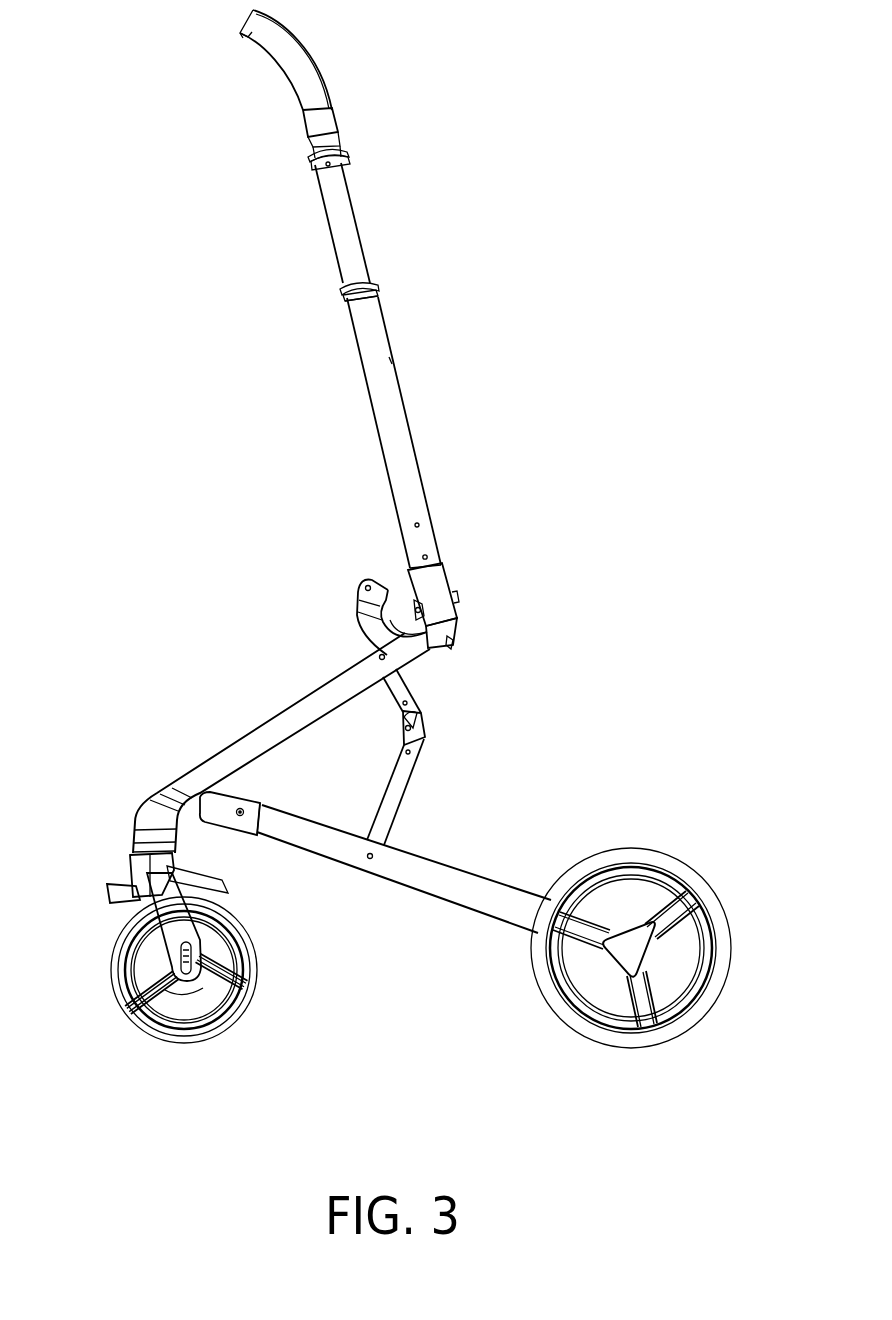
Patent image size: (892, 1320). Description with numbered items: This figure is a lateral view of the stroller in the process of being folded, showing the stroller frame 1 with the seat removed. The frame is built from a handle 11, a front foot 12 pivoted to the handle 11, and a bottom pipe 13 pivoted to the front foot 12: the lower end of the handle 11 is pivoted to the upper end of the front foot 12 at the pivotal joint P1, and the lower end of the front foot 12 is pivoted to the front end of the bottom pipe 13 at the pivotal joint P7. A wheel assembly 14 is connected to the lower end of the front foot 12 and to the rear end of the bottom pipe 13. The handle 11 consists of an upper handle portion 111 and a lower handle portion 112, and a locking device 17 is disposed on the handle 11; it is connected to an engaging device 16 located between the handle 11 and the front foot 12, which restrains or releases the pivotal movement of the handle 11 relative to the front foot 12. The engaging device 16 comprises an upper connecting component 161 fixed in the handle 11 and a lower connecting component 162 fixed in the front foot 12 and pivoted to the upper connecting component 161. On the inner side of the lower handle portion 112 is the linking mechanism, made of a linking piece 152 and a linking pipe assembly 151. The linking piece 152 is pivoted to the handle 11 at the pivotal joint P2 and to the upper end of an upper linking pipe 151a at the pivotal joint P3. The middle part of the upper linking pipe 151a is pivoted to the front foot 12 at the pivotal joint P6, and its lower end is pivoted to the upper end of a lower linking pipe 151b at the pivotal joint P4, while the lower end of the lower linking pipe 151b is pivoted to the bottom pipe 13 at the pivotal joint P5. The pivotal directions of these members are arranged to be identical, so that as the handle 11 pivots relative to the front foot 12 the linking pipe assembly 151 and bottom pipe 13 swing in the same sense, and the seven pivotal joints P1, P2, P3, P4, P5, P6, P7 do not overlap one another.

The stroller frame 1 is at (280, 199).
The handle 11 is at (503, 199).
The upper handle portion 111 is at (349, 228).
The lower handle portion 112 is at (384, 358).
The locking device 17 is at (347, 292).
The engaging device 16 is at (565, 548).
The upper connecting component 161 is at (432, 597).
The lower connecting component 162 is at (413, 632).
The linking piece 152 is at (397, 595).
The linking pipe assembly 151 is at (594, 700).
The upper linking pipe 151a is at (400, 693).
The lower linking pipe 151b is at (398, 776).
The front foot 12 is at (263, 753).
The bottom pipe 13 is at (452, 888).
The wheel assembly 14 is at (638, 1033).
The pivotal joint P1 is at (416, 610).
The pivotal joint P2 is at (427, 556).
The pivotal joint P3 is at (366, 587).
The pivotal joint P4 is at (405, 729).
The pivotal joint P5 is at (369, 859).
The pivotal joint P6 is at (385, 657).
The pivotal joint P7 is at (237, 809).